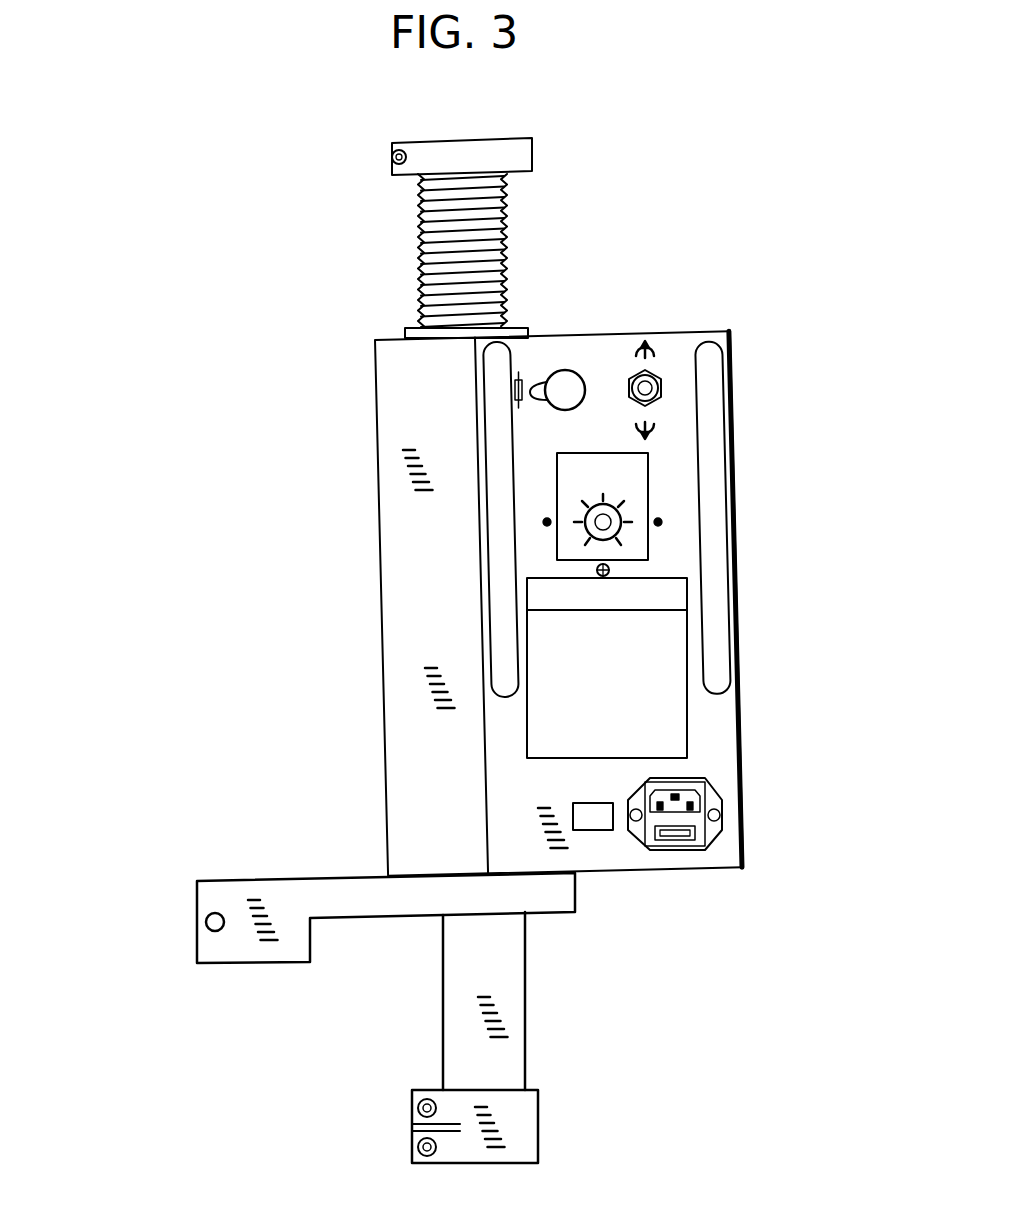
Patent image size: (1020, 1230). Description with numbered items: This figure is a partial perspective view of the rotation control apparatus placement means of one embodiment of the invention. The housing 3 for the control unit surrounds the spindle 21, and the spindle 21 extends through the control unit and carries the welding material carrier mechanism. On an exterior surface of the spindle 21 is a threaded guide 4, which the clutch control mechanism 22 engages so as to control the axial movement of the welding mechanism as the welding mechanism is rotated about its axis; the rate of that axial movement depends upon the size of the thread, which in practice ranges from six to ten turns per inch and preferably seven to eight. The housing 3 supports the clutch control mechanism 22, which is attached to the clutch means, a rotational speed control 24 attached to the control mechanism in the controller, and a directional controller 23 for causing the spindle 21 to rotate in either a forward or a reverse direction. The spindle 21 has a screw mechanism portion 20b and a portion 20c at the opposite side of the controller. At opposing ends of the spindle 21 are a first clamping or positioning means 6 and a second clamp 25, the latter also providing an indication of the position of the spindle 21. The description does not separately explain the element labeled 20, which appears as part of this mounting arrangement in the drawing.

The housing 3 is at (400, 636).
The threaded guide 4 is at (425, 232).
The first clamping or positioning means 6 is at (522, 152).
The base plate 20 is at (237, 947).
The screw mechanism portion 20b is at (530, 218).
The portion at the opposite side of the controller 20c is at (415, 1017).
The spindle 21 is at (510, 987).
The clutch control mechanism 22 is at (661, 306).
The directional controller 23 is at (672, 346).
The rotational speed control 24 is at (622, 487).
The second clamp 25 is at (535, 1123).